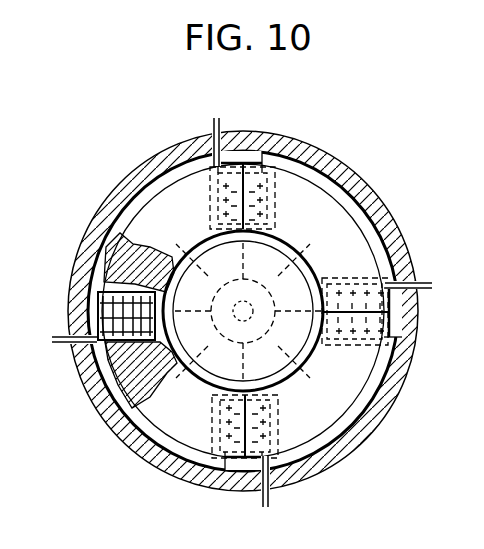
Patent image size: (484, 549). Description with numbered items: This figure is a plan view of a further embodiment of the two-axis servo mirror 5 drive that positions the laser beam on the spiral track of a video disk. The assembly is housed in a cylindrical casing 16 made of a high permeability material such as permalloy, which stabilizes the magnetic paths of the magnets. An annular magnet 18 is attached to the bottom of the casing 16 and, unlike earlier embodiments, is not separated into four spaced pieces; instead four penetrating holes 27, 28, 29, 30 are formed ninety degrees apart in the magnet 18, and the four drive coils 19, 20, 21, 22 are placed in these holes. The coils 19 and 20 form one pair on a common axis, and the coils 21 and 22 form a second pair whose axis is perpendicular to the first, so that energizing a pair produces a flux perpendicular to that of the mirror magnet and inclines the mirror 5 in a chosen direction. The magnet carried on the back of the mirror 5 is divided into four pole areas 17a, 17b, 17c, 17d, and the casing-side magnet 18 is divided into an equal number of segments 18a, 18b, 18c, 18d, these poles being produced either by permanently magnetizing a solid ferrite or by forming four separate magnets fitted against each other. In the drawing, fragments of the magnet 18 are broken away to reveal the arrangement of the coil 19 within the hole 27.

The two-axis servo mirror 5 is at (272, 266).
The cylindrical casing 16 is at (373, 422).
The pole area 17a is at (292, 375).
The pole area 17b is at (200, 375).
The pole area 17c is at (195, 247).
The pole area 17d is at (282, 258).
The annular magnet 18 is at (352, 211).
The magnet segment 18a is at (366, 372).
The magnet segment 18b is at (187, 427).
The magnet segment 18c is at (186, 199).
The magnet segment 18d is at (298, 191).
The drive coil 19 is at (56, 336).
The drive coil 20 is at (415, 272).
The drive coil 21 is at (252, 162).
The drive coil 22 is at (224, 478).
The penetrating hole 27 is at (96, 299).
The penetrating hole 28 is at (413, 330).
The penetrating hole 29 is at (207, 188).
The penetrating hole 30 is at (300, 472).